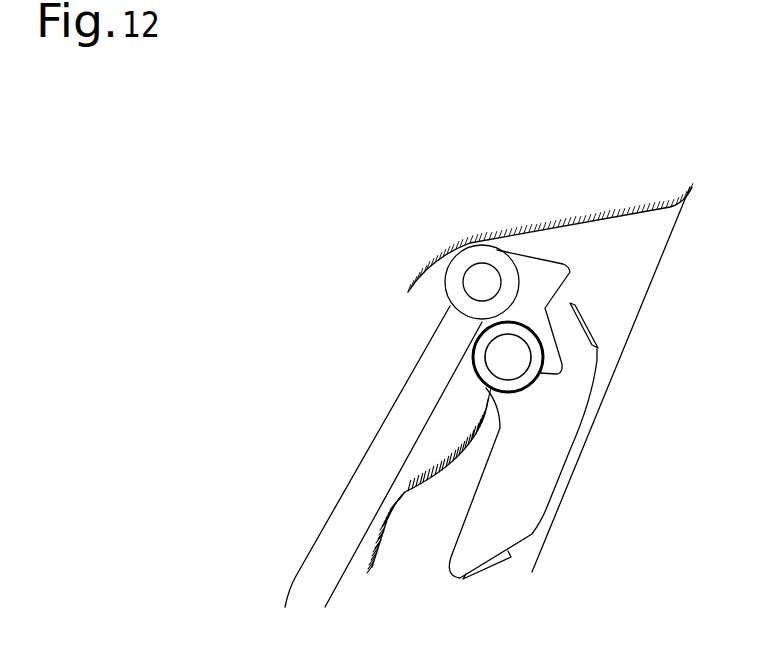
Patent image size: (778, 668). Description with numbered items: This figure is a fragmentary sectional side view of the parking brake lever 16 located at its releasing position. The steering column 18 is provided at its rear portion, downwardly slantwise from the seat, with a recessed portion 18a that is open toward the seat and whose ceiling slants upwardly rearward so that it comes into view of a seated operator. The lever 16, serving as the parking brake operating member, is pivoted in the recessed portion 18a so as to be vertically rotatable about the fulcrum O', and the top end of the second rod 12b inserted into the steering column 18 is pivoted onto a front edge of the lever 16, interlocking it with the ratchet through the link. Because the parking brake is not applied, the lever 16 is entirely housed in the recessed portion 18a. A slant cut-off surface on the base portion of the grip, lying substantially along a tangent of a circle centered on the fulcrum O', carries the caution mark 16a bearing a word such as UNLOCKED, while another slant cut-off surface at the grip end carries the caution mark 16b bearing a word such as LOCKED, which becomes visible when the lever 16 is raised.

The second rod 12b is at (393, 423).
The parking brake lever 16 is at (565, 421).
The caution mark 16a is at (583, 327).
The caution mark 16b is at (487, 570).
The steering column 18 is at (551, 514).
The recessed portion 18a is at (632, 260).
The fulcrum O' is at (569, 357).